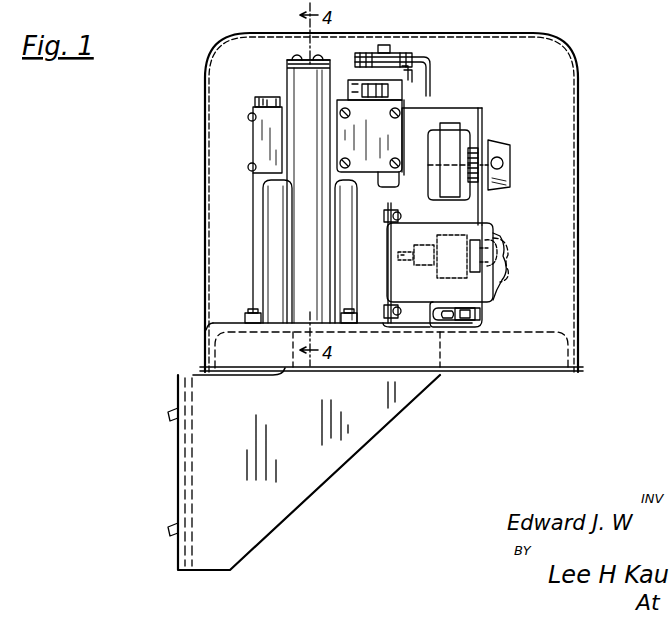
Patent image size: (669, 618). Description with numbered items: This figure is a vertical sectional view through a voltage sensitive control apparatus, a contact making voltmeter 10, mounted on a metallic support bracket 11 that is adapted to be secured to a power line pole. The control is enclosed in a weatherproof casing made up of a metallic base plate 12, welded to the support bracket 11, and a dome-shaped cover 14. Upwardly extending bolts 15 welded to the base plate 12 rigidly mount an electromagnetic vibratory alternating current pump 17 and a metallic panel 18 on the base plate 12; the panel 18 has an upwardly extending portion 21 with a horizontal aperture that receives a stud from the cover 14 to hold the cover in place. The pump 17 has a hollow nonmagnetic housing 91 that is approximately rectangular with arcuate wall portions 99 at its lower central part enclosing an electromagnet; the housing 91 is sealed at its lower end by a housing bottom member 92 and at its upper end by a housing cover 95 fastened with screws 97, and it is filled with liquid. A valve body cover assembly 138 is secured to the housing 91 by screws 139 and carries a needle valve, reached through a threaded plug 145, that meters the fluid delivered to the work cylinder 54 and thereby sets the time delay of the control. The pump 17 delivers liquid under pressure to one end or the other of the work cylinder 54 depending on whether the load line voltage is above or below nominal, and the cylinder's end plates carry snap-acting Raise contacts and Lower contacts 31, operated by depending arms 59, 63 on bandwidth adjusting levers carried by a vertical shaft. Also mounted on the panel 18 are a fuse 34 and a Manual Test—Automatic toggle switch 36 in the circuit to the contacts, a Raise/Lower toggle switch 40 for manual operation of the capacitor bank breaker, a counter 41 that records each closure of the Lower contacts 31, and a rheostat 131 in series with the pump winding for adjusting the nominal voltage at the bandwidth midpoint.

The contact making voltmeter 10 is at (497, 97).
The support bracket 11 is at (221, 565).
The base plate 12 is at (560, 328).
The cover 14 is at (578, 252).
The bolts 15 is at (480, 313).
The electromagnetic vibratory alternating current pump 17 is at (308, 191).
The panel 18 is at (480, 121).
The upwardly extending portion 21 is at (438, 325).
The Lower contacts 31 is at (378, 106).
The fuse 34 is at (503, 278).
The Manual Test—Automatic toggle switch 36 is at (505, 168).
The toggle switch 40 is at (508, 255).
The counter 41 is at (438, 263).
The work cylinder 54 is at (370, 143).
The depending arm 59 is at (410, 84).
The depending arm 63 is at (431, 86).
The hollow housing 91 is at (300, 258).
The housing bottom member 92 is at (213, 323).
The housing cover 95 is at (287, 59).
The screws 97 is at (297, 55).
The arcuate wall portions 99 is at (272, 232).
The rheostat 131 is at (510, 150).
The valve body cover assembly 138 is at (262, 136).
The screws 139 is at (249, 170).
The plug 145 is at (258, 98).